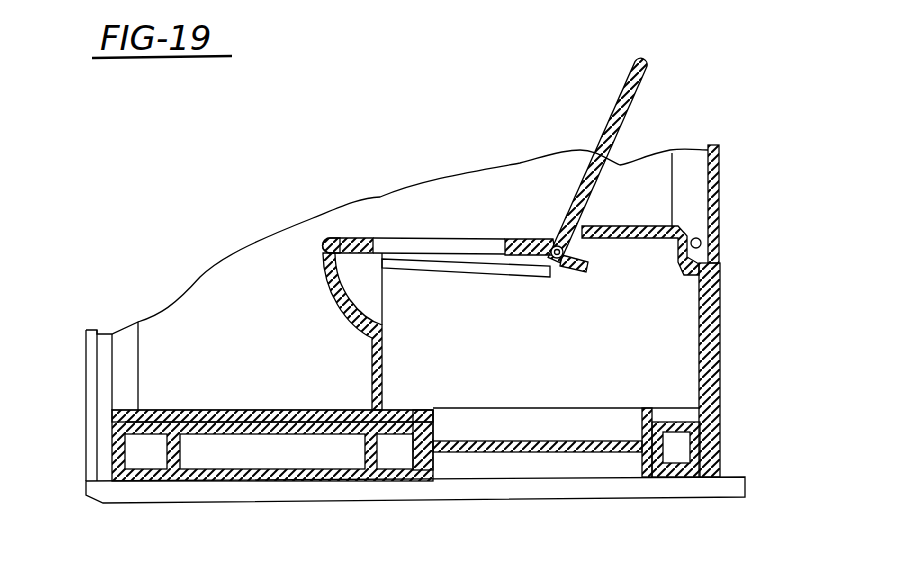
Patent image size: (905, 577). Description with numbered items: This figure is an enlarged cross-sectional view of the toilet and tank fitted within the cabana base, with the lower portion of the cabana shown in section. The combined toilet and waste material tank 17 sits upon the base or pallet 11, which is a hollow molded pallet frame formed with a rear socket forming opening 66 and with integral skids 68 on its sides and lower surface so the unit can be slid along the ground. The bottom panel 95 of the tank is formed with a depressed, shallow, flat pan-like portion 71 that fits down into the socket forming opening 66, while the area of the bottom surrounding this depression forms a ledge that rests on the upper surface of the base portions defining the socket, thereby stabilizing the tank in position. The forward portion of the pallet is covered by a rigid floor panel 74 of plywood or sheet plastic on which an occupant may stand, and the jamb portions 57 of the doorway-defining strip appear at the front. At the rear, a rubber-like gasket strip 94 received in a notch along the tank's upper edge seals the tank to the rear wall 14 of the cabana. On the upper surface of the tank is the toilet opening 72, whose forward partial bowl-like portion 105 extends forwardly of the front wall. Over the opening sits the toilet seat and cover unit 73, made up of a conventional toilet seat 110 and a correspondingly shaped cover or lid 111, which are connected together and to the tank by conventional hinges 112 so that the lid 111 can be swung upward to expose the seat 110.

The base or pallet 11 is at (112, 452).
The rear wall 14 is at (720, 196).
The combined toilet and waste material tank 17 is at (690, 376).
The jamb portions 57 is at (86, 363).
The rear socket forming opening 66 is at (650, 477).
The skids 68 is at (730, 487).
The pan-like portion 71 is at (535, 452).
The toilet opening 72 is at (412, 249).
The toilet seat and cover unit 73 is at (582, 136).
The rigid floor panel 74 is at (205, 409).
The gasket strip 94 is at (706, 244).
The bottom panel 95 is at (430, 408).
The partial bowl-like portion 105 is at (338, 302).
The toilet seat 110 is at (340, 238).
The cover or lid 111 is at (638, 98).
The hinges 112 is at (580, 264).